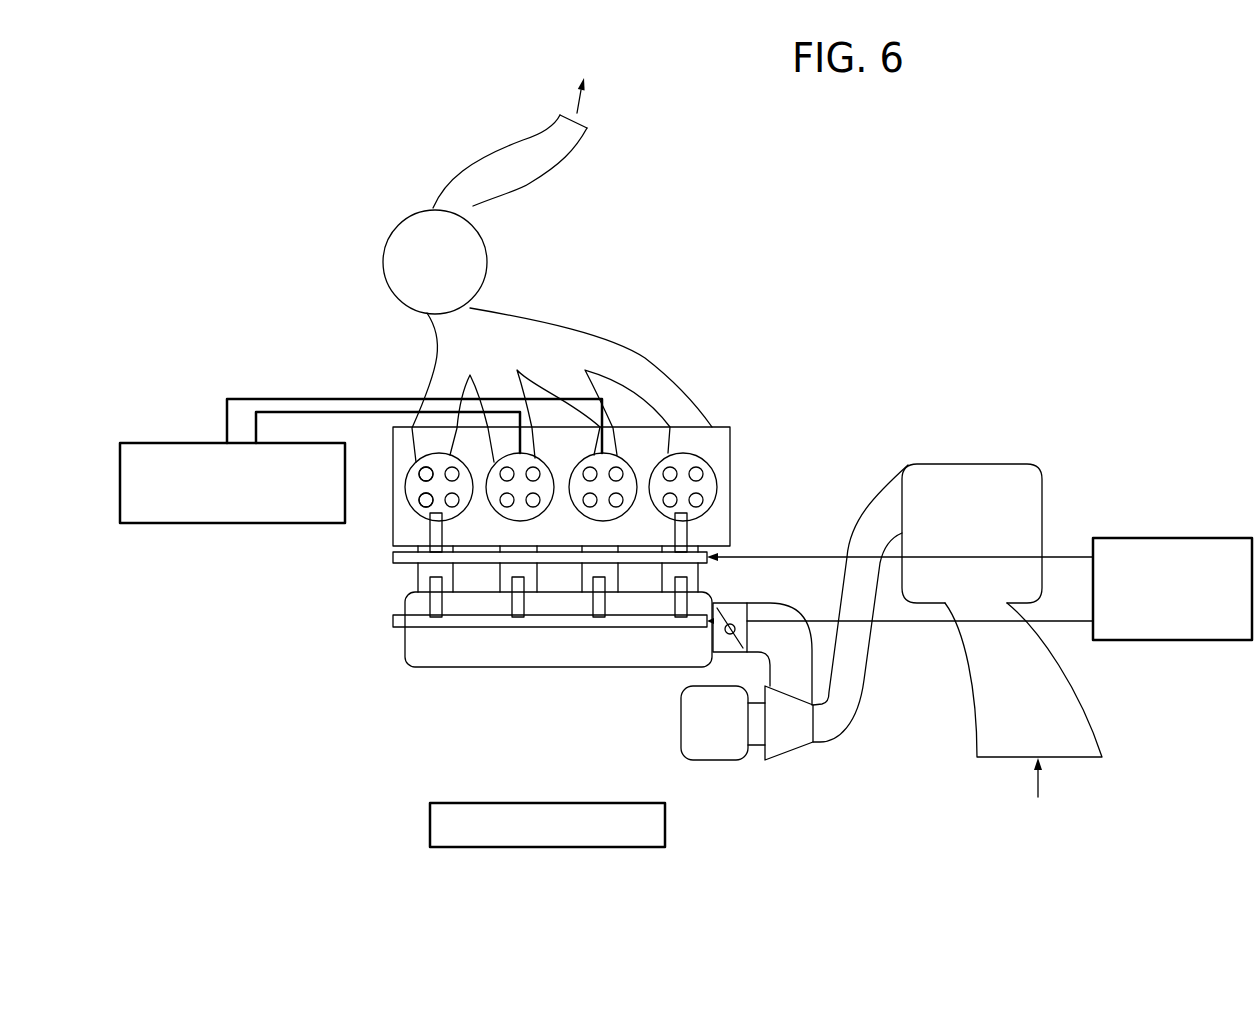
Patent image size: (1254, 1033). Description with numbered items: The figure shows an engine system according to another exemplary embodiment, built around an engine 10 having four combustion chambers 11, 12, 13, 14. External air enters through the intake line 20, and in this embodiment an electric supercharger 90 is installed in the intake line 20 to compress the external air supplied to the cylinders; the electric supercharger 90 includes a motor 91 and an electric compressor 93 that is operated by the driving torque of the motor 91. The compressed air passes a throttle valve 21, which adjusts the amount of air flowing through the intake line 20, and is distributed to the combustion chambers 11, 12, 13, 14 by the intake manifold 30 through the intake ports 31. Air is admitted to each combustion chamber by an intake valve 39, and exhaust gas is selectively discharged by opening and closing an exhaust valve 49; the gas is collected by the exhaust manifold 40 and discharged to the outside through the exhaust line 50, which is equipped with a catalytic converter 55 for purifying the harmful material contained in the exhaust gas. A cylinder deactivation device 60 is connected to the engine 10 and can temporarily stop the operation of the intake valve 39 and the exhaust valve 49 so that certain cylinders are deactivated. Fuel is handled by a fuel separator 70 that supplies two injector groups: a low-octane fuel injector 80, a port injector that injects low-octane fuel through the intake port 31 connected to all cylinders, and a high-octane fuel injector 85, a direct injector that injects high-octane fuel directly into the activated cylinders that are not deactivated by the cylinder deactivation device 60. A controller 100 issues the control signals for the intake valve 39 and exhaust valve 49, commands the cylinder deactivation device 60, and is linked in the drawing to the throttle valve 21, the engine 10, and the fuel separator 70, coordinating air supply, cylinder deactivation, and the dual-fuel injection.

The engine 10 is at (382, 535).
The combustion chamber 11 is at (450, 455).
The combustion chamber 12 is at (535, 458).
The combustion chamber 13 is at (622, 458).
The combustion chamber 14 is at (686, 453).
The intake line 20 is at (855, 535).
The throttle valve 21 is at (735, 603).
The intake manifold 30 is at (455, 667).
The intake port 31 is at (417, 582).
The intake valve 39 is at (419, 500).
The exhaust manifold 40 is at (536, 306).
The exhaust valve 49 is at (419, 473).
The exhaust line 50 is at (502, 155).
The catalytic converter 55 is at (396, 225).
The cylinder deactivation device 60 is at (197, 443).
The fuel separator 70 is at (1172, 538).
The low-octane fuel injector 80 is at (393, 628).
The high-octane fuel injector 85 is at (395, 565).
The electric supercharger 90 is at (748, 772).
The motor 91 is at (713, 762).
The electric compressor 93 is at (790, 753).
The controller 100 is at (430, 822).